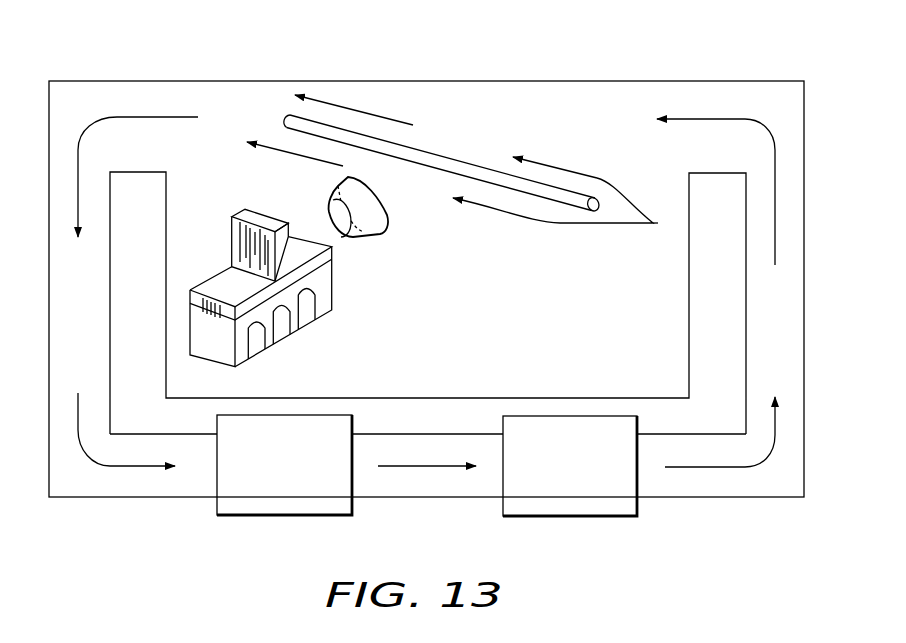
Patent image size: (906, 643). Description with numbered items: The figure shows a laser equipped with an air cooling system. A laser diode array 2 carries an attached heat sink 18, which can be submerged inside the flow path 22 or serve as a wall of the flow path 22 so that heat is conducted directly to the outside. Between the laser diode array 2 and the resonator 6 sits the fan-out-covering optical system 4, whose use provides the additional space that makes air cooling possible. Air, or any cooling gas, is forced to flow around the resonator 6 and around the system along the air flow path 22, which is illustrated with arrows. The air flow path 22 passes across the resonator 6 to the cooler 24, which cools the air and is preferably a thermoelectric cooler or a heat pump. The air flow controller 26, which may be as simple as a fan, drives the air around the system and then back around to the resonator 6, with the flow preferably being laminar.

The air flow path 22 is at (144, 105).
The resonator 6 is at (452, 148).
The fan-out-covering optical system 4 is at (372, 227).
The laser diode array 2 is at (228, 277).
The heat sink 18 is at (228, 347).
The cooler 24 is at (282, 502).
The air flow controller 26 is at (567, 507).